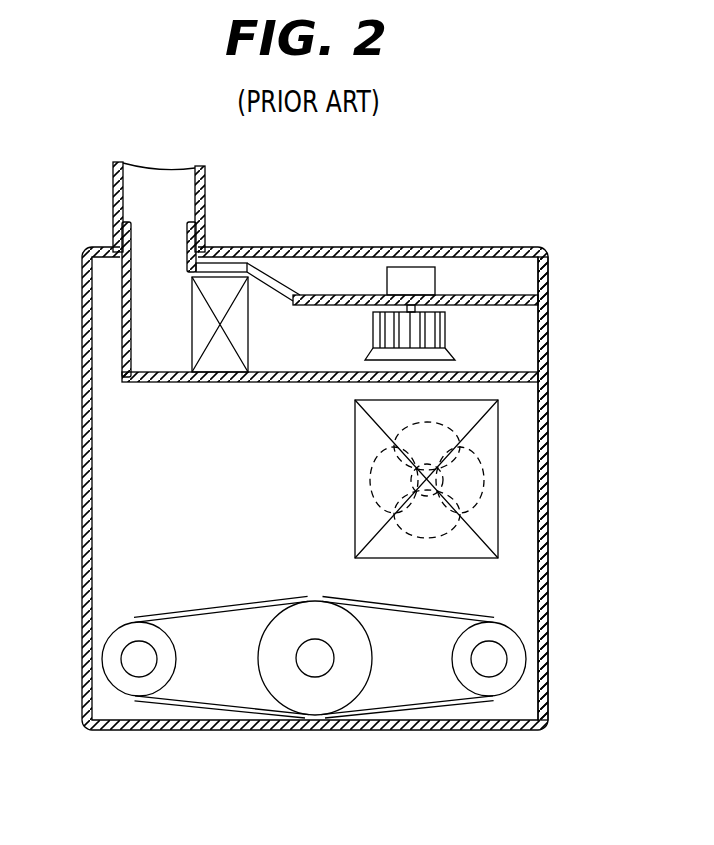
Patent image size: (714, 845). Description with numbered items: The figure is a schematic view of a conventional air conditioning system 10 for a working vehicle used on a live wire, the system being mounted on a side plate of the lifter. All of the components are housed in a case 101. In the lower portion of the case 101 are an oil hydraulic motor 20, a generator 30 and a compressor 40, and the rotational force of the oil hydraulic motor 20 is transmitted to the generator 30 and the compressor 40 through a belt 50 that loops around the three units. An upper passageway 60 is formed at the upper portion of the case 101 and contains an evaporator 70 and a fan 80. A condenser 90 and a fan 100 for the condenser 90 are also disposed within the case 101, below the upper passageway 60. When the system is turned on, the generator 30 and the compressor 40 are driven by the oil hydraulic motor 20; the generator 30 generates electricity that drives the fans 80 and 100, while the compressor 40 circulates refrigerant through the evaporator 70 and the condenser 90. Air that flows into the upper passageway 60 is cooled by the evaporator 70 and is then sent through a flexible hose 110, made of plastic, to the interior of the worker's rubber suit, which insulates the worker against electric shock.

The air conditioning system 10 is at (468, 240).
The oil hydraulic motor 20 is at (310, 705).
The generator 30 is at (136, 688).
The compressor 40 is at (488, 690).
The belt 50 is at (210, 706).
The upper passageway 60 is at (288, 310).
The evaporator 70 is at (222, 290).
The fan 80 is at (373, 333).
The condenser 90 is at (498, 540).
The fan 100 is at (475, 475).
The case 101 is at (546, 495).
The flexible hose 110 is at (113, 185).